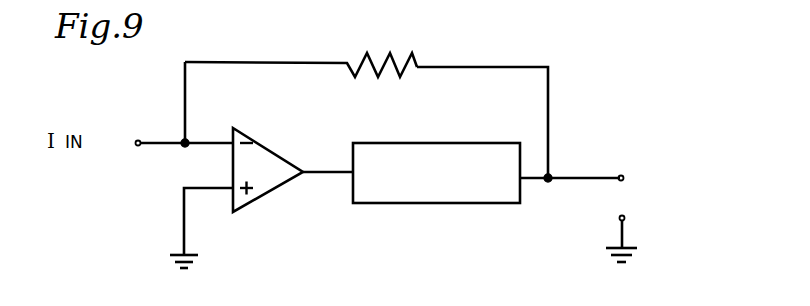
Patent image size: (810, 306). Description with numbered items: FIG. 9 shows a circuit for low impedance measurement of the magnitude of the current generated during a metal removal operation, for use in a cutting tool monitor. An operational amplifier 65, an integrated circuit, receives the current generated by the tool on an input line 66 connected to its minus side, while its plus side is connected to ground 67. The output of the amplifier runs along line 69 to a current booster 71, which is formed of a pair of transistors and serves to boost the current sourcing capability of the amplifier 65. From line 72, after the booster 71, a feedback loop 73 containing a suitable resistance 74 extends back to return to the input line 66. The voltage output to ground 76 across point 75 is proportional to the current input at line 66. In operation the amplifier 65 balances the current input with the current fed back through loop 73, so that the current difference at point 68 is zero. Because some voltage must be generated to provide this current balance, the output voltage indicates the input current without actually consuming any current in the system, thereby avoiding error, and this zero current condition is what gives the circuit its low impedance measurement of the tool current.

The operational amplifier 65 is at (277, 150).
The input line 66 is at (152, 147).
The ground 67 is at (180, 250).
The point 68 is at (186, 142).
The line 69 is at (323, 176).
The current booster 71 is at (440, 204).
The line 72 is at (572, 181).
The feedback loop 73 is at (500, 67).
The resistance 74 is at (390, 55).
The point 75 is at (623, 175).
The ground 76 is at (606, 254).